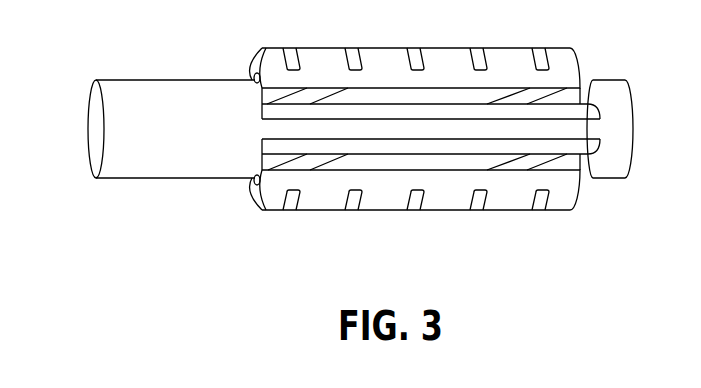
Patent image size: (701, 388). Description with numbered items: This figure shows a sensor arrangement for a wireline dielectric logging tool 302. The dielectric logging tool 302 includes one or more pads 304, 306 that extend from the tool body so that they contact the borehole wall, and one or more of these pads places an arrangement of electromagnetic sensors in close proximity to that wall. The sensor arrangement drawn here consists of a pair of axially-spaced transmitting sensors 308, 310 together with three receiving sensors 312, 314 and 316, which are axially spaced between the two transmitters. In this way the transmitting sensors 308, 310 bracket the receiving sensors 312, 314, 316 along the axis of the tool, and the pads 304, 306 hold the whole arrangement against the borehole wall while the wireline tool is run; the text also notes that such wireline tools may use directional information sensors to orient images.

The wireline dielectric logging tool 302 is at (130, 80).
The pad 304 is at (252, 197).
The pad 306 is at (253, 60).
The transmitting sensor 308 is at (288, 208).
The transmitting sensor 310 is at (537, 208).
The receiving sensor 312 is at (358, 208).
The receiving sensor 314 is at (412, 208).
The receiving sensor 316 is at (478, 208).